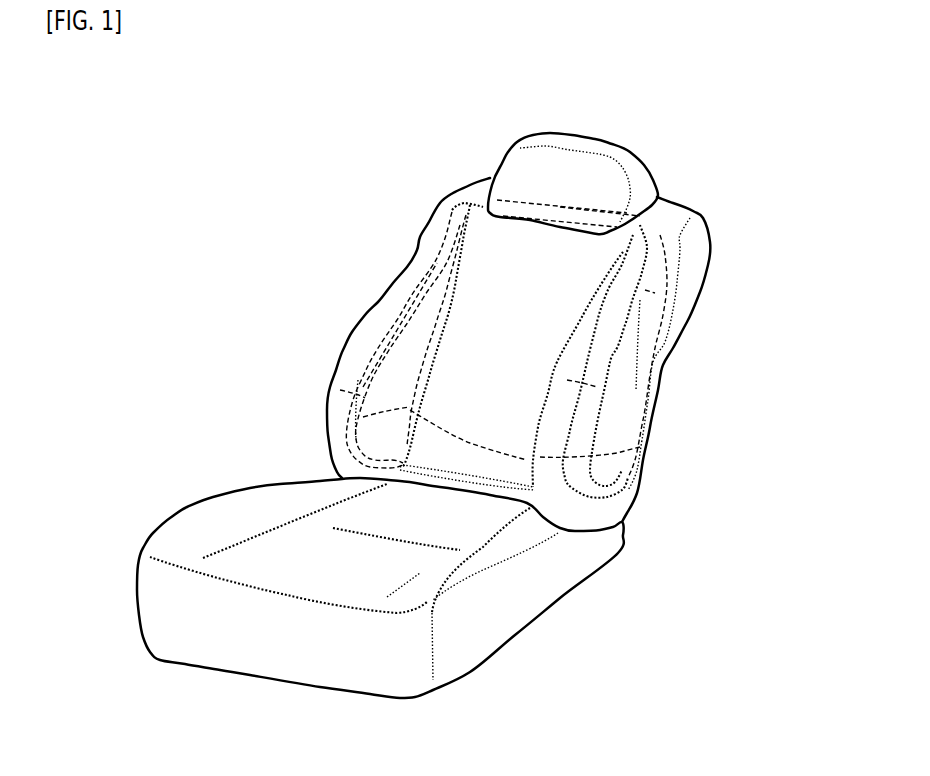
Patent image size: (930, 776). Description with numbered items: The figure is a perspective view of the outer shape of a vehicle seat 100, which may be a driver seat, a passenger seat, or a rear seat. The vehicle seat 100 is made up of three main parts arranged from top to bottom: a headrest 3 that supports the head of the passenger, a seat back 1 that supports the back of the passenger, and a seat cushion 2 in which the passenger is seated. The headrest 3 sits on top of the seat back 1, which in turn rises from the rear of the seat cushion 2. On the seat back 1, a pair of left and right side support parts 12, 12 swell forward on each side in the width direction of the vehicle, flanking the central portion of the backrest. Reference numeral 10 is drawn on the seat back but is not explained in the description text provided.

The vehicle seat 100 is at (226, 120).
The seat back 1 is at (710, 238).
The seat cushion 2 is at (213, 497).
The headrest 3 is at (595, 138).
The side bolster 10 is at (385, 360).
The side support part 12 is at (343, 390).